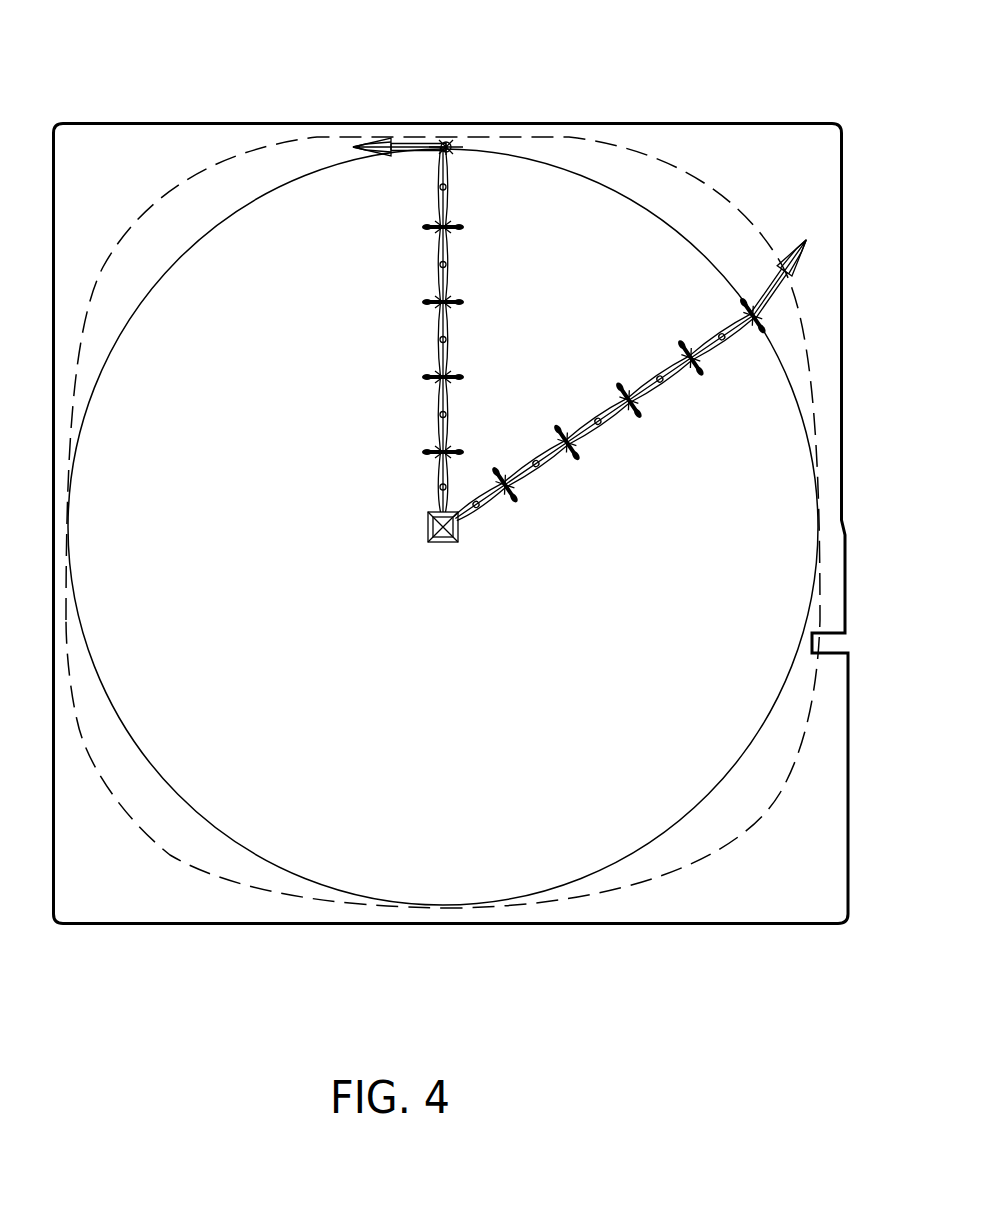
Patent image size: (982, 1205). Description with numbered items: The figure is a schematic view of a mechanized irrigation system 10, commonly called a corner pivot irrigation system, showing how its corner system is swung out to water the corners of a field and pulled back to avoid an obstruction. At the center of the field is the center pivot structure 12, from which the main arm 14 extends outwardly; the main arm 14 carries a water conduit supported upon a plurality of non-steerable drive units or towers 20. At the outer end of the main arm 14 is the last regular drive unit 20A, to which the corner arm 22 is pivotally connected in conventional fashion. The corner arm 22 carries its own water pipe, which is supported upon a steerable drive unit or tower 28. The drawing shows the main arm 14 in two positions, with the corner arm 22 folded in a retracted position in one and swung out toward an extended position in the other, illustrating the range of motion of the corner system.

The mechanized irrigation system 10 is at (405, 350).
The center pivot structure 12 is at (442, 540).
The main arm 14 is at (453, 407).
The non-steerable drive units 20 is at (460, 298).
The last regular drive unit 20A is at (462, 143).
The corner arm 22 is at (418, 143).
The steerable drive unit 28 is at (383, 143).